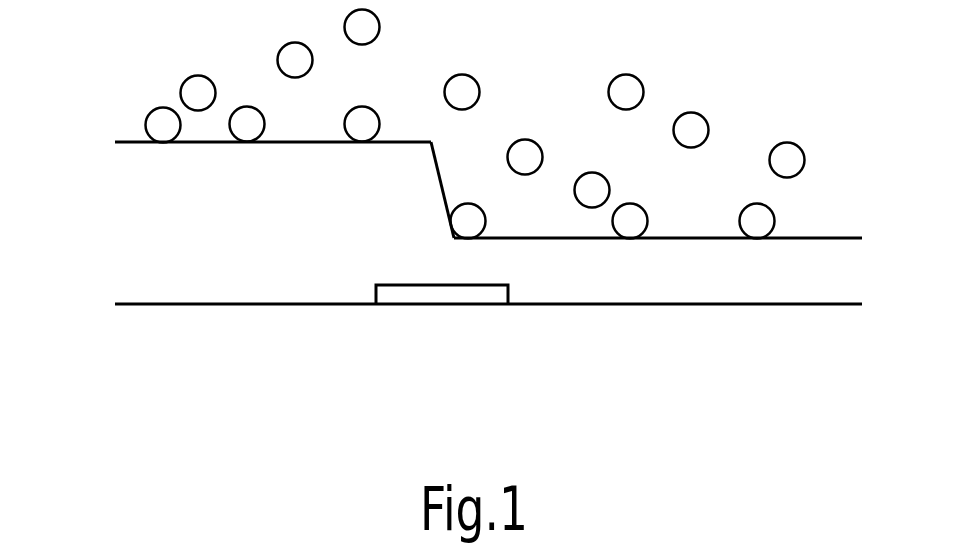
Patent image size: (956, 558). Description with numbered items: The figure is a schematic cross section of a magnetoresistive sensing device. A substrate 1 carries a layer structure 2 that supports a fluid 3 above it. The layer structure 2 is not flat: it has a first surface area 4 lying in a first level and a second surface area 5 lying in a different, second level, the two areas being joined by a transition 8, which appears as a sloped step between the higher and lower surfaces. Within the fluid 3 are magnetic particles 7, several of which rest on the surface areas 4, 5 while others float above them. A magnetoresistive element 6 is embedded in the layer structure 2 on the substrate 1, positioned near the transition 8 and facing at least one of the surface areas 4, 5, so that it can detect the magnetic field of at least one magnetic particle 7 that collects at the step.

The substrate 1 is at (128, 347).
The layer structure 2 is at (128, 215).
The fluid 3 is at (128, 42).
The first surface area 4 is at (832, 238).
The second surface area 5 is at (136, 142).
The magnetoresistive element 6 is at (432, 293).
The magnetic particle 7 is at (484, 214).
The transition 8 is at (443, 190).